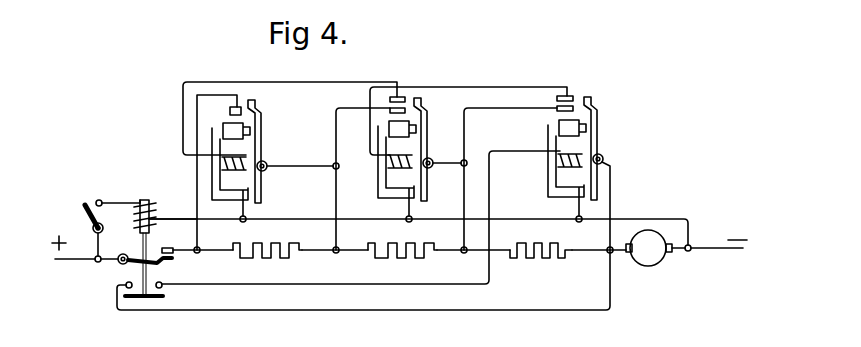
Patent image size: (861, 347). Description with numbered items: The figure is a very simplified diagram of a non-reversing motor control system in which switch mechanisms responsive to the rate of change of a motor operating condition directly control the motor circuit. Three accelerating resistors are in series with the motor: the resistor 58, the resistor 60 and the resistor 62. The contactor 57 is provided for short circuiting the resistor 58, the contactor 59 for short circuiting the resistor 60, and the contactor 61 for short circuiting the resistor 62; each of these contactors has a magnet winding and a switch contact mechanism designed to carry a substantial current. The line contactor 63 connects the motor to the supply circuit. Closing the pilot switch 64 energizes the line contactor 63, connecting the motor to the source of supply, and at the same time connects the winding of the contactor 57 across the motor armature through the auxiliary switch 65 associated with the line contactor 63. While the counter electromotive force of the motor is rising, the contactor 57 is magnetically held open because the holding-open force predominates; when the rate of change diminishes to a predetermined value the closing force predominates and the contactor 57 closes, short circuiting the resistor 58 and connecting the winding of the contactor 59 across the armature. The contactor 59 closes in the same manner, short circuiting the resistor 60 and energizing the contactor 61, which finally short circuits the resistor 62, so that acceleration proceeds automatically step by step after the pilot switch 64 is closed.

The contactor 57 is at (375, 203).
The resistor 58 is at (536, 259).
The contactor 59 is at (422, 159).
The resistor 60 is at (401, 259).
The contactor 61 is at (275, 161).
The resistor 62 is at (266, 259).
The line contactor 63 is at (140, 228).
The pilot switch 64 is at (92, 225).
The auxiliary switch 65 is at (147, 299).